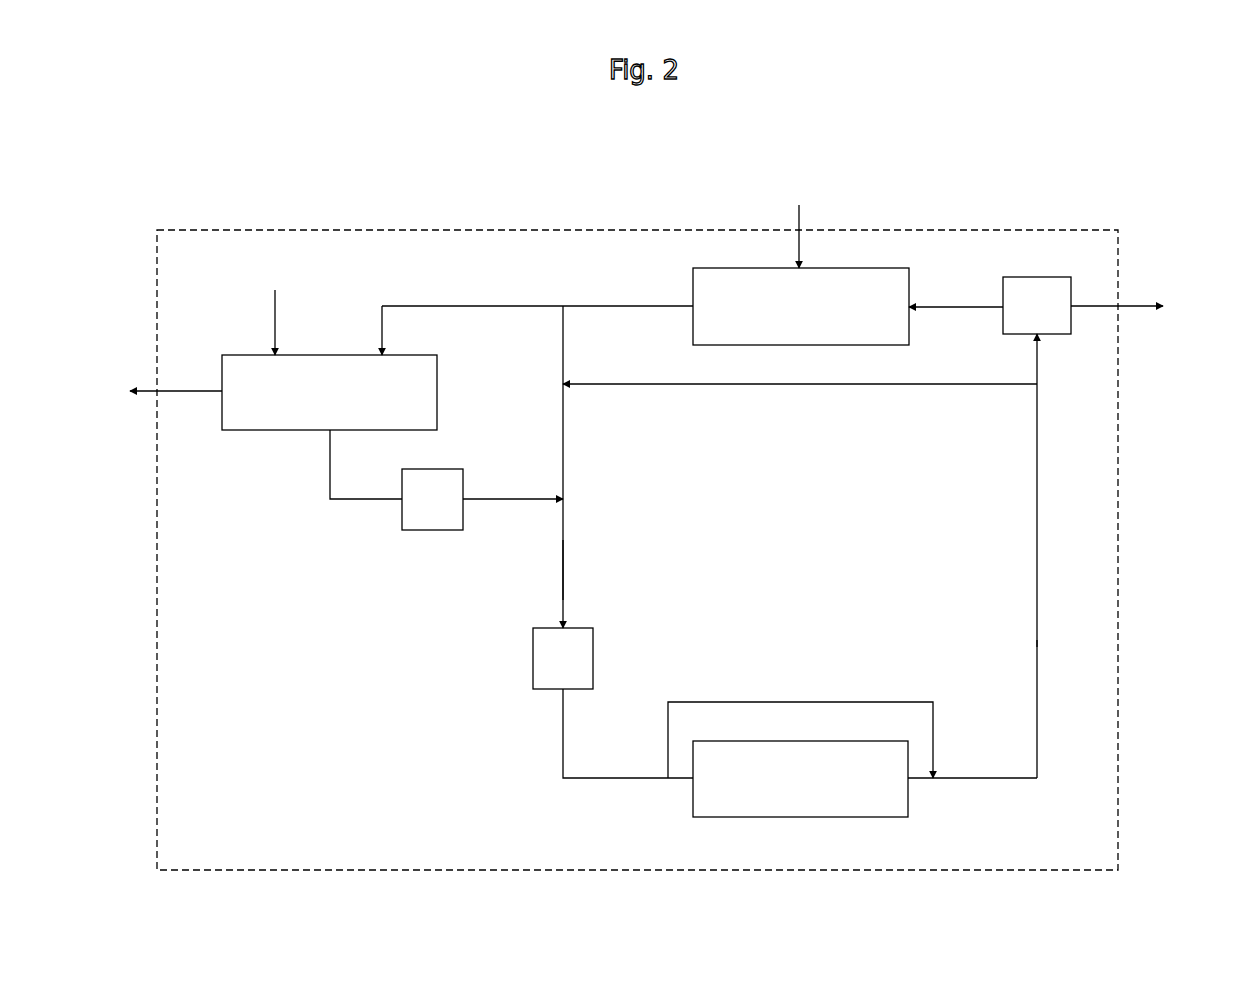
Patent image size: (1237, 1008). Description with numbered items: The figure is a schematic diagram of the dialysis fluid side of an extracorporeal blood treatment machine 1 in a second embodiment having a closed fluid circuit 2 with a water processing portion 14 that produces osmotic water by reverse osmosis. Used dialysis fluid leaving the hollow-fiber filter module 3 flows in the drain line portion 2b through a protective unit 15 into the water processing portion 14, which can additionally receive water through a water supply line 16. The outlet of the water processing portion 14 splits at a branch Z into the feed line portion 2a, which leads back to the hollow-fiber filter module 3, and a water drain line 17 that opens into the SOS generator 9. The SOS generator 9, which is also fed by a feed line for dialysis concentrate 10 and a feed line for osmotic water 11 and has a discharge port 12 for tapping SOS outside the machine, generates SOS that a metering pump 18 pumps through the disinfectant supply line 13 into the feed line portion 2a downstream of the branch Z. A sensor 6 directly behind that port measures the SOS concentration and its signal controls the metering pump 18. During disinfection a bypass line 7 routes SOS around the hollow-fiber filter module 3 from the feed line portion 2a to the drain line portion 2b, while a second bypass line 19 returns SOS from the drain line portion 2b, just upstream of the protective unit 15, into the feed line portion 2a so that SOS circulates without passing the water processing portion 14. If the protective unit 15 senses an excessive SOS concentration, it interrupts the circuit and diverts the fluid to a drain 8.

The extracorporeal blood treatment machine 1 is at (1119, 473).
The fluid circuit 2 is at (1037, 647).
The feed line portion 2a is at (588, 570).
The drain line portion 2b is at (1011, 556).
The hollow-fiber filter module 3 is at (865, 779).
The sensor 6 is at (613, 703).
The bypass line 7 is at (800, 719).
The drain 8 is at (1118, 330).
The SOS generator 9 is at (329, 392).
The feed line for dialysis concentrate 10 is at (252, 322).
The feed line for osmotic water 11 is at (356, 329).
The discharge port 12 is at (176, 414).
The disinfectant supply line 13 is at (366, 489).
The water processing portion 14 is at (801, 306).
The protective unit 15 is at (990, 305).
The water supply line 16 is at (818, 226).
The water drain line 17 is at (537, 288).
The metering pump 18 is at (482, 499).
The second bypass line 19 is at (800, 410).
The branch Z is at (557, 445).